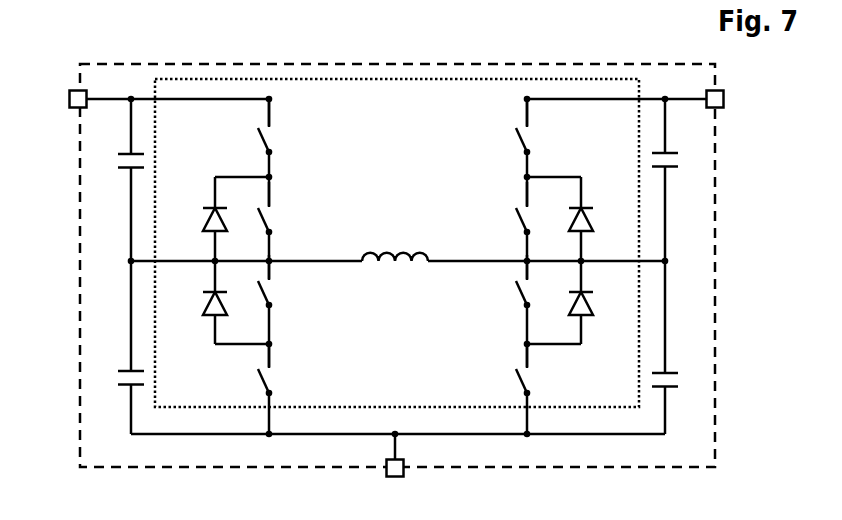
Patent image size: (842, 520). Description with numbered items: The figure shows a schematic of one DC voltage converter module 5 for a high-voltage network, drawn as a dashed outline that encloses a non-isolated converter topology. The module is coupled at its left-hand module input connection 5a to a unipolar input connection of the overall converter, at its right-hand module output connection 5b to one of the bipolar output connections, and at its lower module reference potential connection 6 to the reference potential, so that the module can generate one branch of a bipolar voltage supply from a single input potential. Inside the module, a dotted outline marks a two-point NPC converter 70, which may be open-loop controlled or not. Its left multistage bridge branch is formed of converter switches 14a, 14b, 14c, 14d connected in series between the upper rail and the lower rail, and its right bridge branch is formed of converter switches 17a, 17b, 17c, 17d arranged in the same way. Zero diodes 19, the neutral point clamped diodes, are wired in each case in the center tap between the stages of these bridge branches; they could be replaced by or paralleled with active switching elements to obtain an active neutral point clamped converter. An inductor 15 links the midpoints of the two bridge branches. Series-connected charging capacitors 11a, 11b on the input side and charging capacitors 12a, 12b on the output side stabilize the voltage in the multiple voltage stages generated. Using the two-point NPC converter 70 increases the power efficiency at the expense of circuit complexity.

The DC voltage converter module 5 is at (716, 270).
The module input connection 5a is at (68, 104).
The module output connection 5b is at (724, 101).
The module reference potential connection 6 is at (404, 471).
The charging capacitor 11a is at (125, 152).
The charging capacitor 11b is at (125, 371).
The charging capacitor 12a is at (671, 152).
The charging capacitor 12b is at (671, 371).
The converter switch 14a is at (273, 140).
The converter switch 14b is at (273, 220).
The converter switch 14c is at (273, 293).
The converter switch 14d is at (273, 381).
The inductor 15 is at (394, 264).
The converter switch 17a is at (513, 147).
The converter switch 17b is at (513, 222).
The converter switch 17c is at (513, 299).
The converter switch 17d is at (513, 384).
The zero diode 19 is at (204, 215).
The two-point NPC converter 70 is at (601, 409).